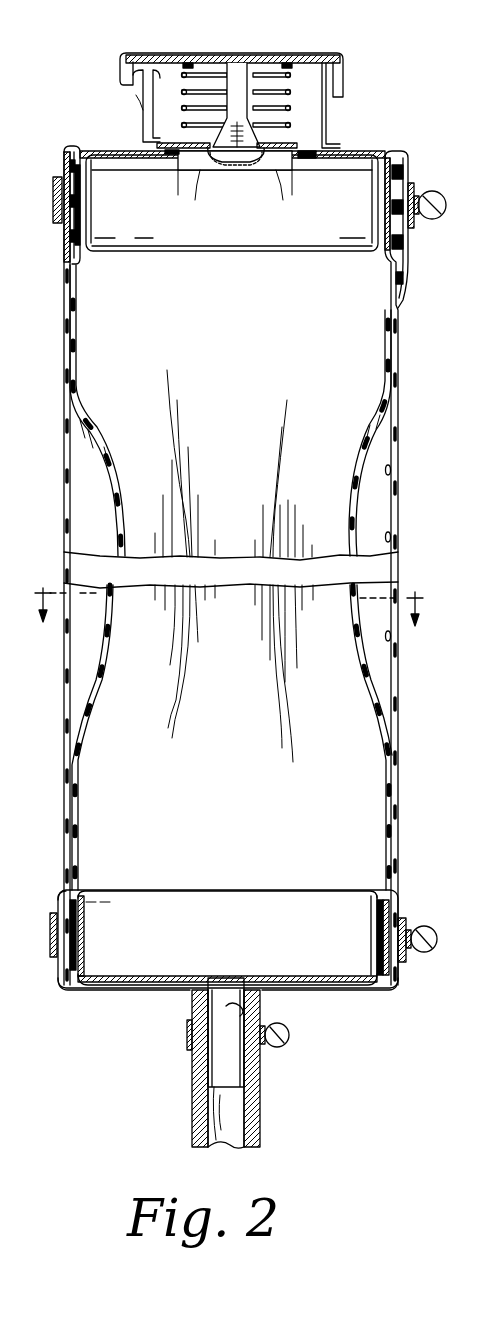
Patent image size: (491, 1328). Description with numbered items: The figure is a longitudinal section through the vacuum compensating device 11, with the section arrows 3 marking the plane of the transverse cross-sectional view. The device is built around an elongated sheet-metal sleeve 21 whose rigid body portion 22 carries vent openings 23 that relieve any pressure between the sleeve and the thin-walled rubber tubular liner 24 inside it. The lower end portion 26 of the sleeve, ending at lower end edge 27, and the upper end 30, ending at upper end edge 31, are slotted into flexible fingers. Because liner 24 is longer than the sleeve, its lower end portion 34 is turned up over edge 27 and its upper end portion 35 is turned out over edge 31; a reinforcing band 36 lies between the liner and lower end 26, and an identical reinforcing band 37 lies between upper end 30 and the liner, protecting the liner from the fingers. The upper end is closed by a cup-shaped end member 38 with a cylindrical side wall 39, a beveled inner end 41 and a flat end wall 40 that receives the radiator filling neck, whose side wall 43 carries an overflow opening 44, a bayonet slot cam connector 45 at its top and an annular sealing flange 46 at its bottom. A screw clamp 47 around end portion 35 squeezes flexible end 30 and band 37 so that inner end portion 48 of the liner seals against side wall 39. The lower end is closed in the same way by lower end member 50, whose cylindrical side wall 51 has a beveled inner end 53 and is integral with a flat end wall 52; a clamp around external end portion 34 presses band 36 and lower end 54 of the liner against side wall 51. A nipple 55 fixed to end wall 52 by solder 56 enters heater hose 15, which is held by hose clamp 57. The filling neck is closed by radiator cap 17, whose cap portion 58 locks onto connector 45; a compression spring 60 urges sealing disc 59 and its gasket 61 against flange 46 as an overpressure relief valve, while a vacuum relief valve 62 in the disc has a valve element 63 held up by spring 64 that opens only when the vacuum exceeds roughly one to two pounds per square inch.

The section line 3- 3 is at (228, 619).
The vacuum compensating device 11 is at (401, 446).
The heater hose 15 is at (257, 1129).
The radiator cap 17 is at (248, 54).
The sleeve 21 is at (399, 513).
The rigid body portion 22 is at (398, 583).
The vent openings 23 is at (392, 473).
The tubular liner 24 is at (360, 466).
The lower end portion of sleeve 26 is at (405, 908).
The lower end edge 27 is at (379, 973).
The upper end of sleeve 30 is at (409, 181).
The upper end edge 31 is at (405, 161).
The lower end portion of liner 34 is at (405, 891).
The upper end portion of liner 35 is at (58, 225).
The reinforcing band 36 is at (380, 897).
The reinforcing band 37 is at (66, 151).
The cup-shaped member 38 is at (313, 212).
The cylindrical side wall 39 is at (92, 212).
The flat end wall 40 is at (372, 153).
The beveled inner end 41 is at (372, 247).
The side wall of radiator neck 43 is at (327, 137).
The overflow opening 44 is at (130, 118).
The bayonet slot cam connector 45 is at (339, 56).
The annular sealing flange 46 is at (310, 160).
The screw clamp 47 is at (407, 272).
The inner end portion of liner 48 is at (80, 186).
The lower end member 50 is at (273, 921).
The cylindrical side wall 51 is at (86, 934).
The flat end wall 52 is at (153, 979).
The beveled inner end 53 is at (100, 893).
The inner end portion of liner 54 is at (77, 979).
The nipple 55 is at (248, 1013).
The solder 56 is at (251, 978).
The hose clamp 57 is at (291, 1043).
The cap portion 58 is at (168, 52).
The sealing disc 59 is at (268, 161).
The compression spring 60 is at (291, 75).
The annular gasket 61 is at (293, 150).
The vacuum relief valve 62 is at (228, 172).
The movable valve element 63 is at (237, 161).
The compression spring 64 is at (219, 159).